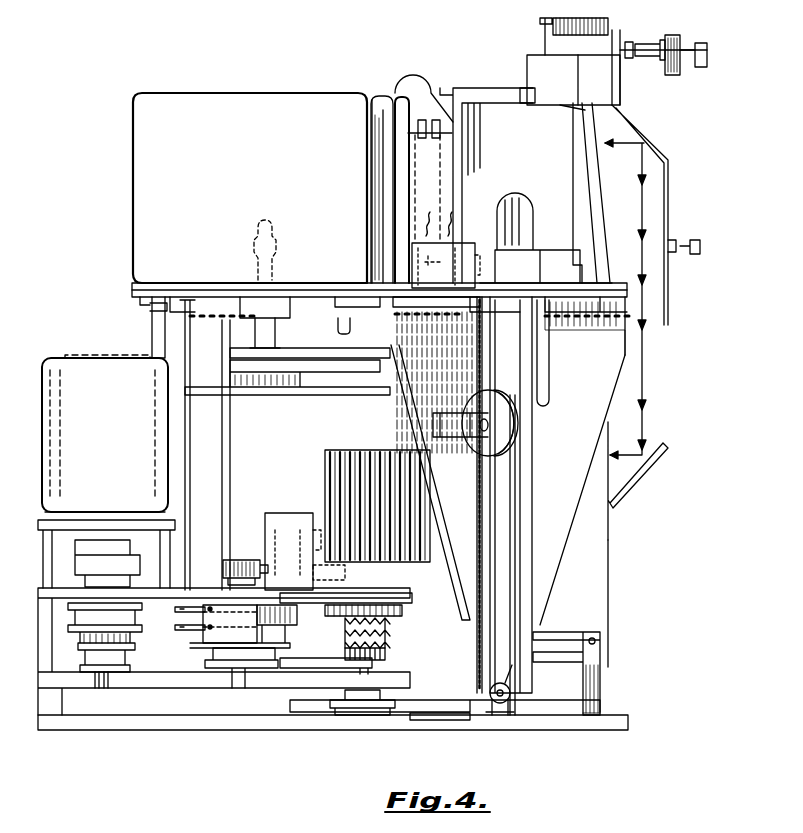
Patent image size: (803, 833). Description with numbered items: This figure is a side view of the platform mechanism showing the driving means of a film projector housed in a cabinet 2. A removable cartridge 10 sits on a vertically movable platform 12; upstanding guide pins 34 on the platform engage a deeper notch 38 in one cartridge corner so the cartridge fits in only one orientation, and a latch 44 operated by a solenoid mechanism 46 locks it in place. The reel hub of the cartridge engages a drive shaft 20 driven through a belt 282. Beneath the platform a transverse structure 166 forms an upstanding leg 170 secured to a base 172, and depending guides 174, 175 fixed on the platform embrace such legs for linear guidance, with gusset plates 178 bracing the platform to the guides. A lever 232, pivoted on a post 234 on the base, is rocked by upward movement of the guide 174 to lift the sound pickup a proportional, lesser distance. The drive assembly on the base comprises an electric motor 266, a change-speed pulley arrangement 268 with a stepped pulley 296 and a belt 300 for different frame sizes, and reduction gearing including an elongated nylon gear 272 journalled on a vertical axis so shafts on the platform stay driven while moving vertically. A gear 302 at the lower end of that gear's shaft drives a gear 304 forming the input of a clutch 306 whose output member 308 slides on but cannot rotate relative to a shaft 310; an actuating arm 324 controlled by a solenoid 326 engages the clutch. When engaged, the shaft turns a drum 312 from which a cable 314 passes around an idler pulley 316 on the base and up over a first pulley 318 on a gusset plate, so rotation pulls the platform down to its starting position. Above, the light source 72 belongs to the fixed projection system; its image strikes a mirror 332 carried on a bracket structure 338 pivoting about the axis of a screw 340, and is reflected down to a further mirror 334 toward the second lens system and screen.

The cabinet 2 is at (112, 148).
The cartridge 10 is at (258, 101).
The platform 12 is at (130, 278).
The drive shaft 20 is at (277, 340).
The guide pins 34 is at (371, 153).
The notch 38 is at (388, 112).
The latch 44 is at (412, 262).
The solenoid mechanism 46 is at (468, 244).
The light source 72 is at (413, 80).
The transverse structure 166 is at (345, 330).
The leg 170 is at (496, 733).
The base 172 is at (292, 733).
The guide 174 is at (188, 352).
The guide 175 is at (528, 512).
The gusset plates 178 is at (152, 320).
The lever 232 is at (578, 634).
The post 234 is at (600, 702).
The electric motor 266 is at (118, 424).
The change-speed pulley arrangement 268 is at (133, 635).
The elongated gear 272 is at (330, 472).
The belt 282 is at (332, 364).
The stepped pulley 296 is at (94, 674).
The belt 300 is at (80, 618).
The gear 302 is at (406, 602).
The gear 304 is at (330, 612).
The clutch 306 is at (394, 628).
The output member 308 is at (385, 646).
The shaft 310 is at (372, 672).
The drum 312 is at (330, 702).
The cable 314 is at (514, 538).
The idler pulley 316 is at (522, 723).
The first pulley 318 is at (492, 412).
The actuating arm 324 is at (248, 666).
The solenoid 326 is at (182, 700).
The mirror 332 is at (654, 144).
The mirror 334 is at (654, 458).
The bracket structure 338 is at (622, 88).
The screw 340 is at (680, 46).